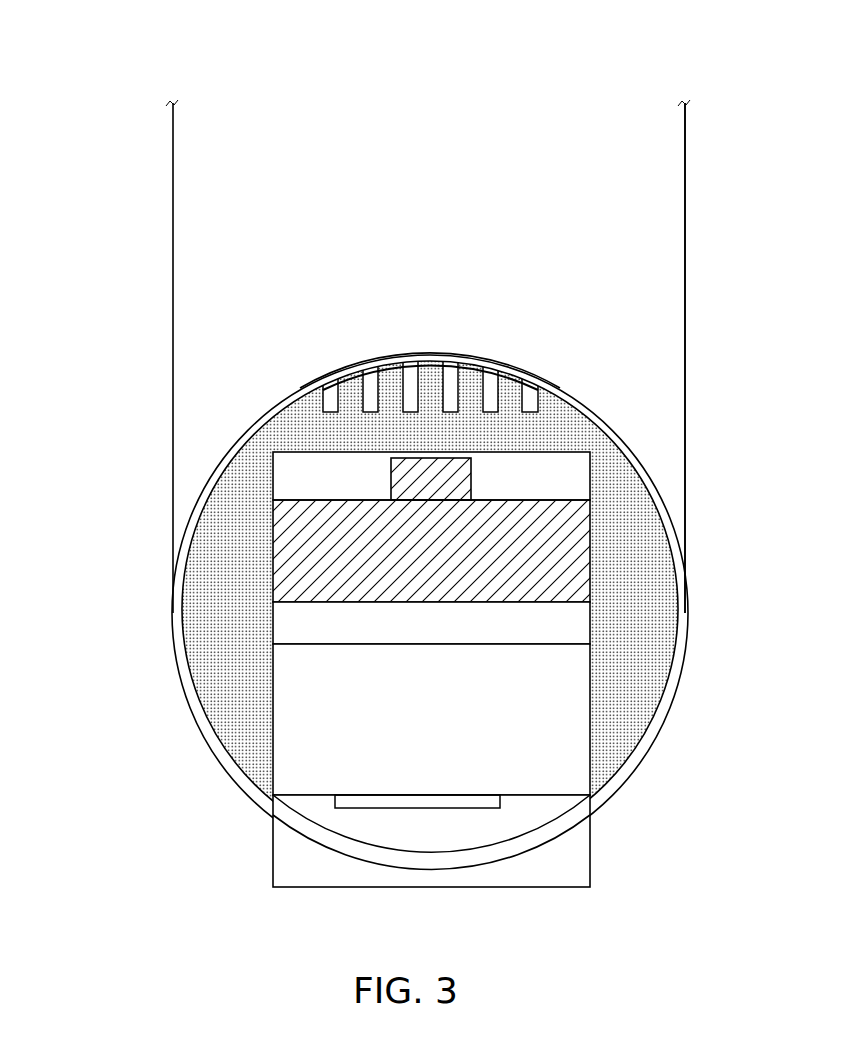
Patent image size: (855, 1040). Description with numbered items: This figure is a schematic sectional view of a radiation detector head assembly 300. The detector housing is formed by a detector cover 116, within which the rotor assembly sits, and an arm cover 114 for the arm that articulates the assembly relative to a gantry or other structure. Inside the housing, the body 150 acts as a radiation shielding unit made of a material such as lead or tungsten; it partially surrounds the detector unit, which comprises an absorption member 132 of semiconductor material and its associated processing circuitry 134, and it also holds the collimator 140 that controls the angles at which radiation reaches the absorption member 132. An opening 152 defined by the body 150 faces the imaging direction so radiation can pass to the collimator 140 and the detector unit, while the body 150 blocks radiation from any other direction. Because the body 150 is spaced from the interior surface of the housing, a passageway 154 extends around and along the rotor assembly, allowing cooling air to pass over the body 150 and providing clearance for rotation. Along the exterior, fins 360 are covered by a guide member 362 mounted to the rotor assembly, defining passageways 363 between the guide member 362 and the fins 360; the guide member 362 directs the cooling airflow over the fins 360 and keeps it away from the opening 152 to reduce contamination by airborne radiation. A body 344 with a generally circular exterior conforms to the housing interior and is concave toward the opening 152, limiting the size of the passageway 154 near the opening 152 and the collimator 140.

The radiation detector head assembly 300 is at (138, 89).
The arm cover 114 is at (686, 217).
The detector cover 116 is at (605, 417).
The body 150 is at (650, 628).
The opening 152 is at (366, 825).
The passageway 154 is at (477, 869).
The body 344 is at (505, 845).
The fins 360 is at (488, 392).
The guide member 362 is at (411, 355).
The passageways 363 is at (438, 373).
The processing circuitry 134 is at (452, 567).
The absorption member 132 is at (452, 633).
The collimator 140 is at (452, 734).